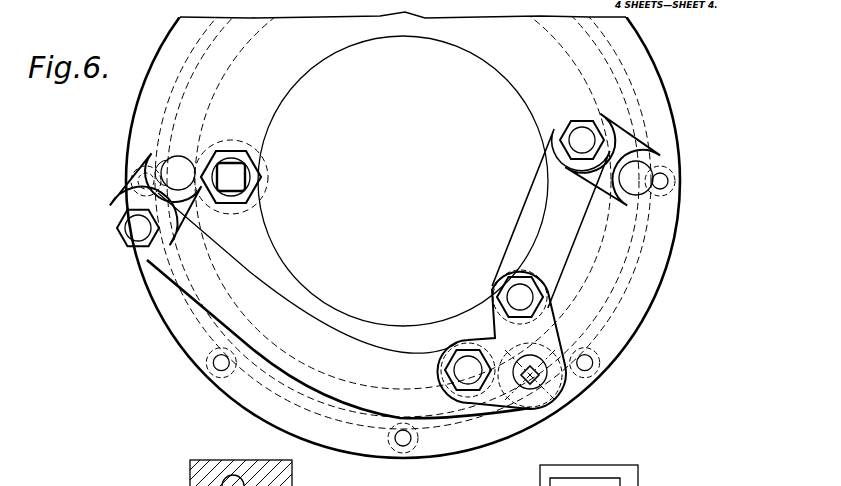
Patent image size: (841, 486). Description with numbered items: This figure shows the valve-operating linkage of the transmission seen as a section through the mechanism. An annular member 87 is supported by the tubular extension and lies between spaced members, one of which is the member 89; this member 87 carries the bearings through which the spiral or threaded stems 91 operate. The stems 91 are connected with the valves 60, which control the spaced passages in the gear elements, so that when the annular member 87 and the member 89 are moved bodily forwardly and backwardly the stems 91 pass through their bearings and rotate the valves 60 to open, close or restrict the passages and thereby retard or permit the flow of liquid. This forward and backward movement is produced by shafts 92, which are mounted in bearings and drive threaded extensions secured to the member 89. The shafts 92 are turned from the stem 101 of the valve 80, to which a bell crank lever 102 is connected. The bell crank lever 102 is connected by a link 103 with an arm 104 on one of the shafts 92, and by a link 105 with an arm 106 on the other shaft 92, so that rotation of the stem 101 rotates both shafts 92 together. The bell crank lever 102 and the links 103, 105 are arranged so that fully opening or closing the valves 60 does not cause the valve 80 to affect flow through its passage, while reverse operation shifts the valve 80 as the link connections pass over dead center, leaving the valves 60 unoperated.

The valve 60 is at (265, 157).
The valve 80 is at (552, 412).
The annular member 87 is at (275, 262).
The member 89 is at (456, 447).
The spiral or threaded stem 91 is at (233, 175).
The shaft 92 is at (172, 168).
The stem 101 is at (562, 397).
The bell crank lever 102 is at (503, 330).
The link 103 is at (553, 241).
The arm 104 is at (641, 146).
The link 105 is at (307, 338).
The arm 106 is at (136, 192).